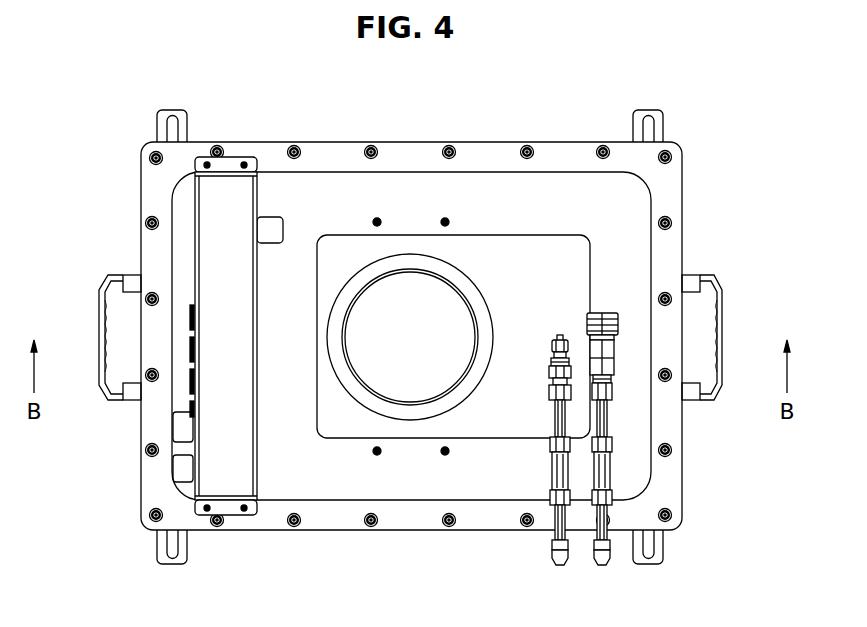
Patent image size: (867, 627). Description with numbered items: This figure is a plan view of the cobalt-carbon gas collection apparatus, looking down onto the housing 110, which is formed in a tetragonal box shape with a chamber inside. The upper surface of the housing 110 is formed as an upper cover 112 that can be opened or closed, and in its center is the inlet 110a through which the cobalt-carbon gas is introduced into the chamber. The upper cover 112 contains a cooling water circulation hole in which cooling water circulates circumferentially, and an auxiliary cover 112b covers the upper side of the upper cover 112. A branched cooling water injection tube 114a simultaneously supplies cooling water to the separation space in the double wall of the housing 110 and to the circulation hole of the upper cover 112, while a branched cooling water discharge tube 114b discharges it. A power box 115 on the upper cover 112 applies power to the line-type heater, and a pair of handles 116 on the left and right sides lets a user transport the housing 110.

The housing 110 is at (546, 132).
The inlet 110a is at (408, 283).
The upper cover 112 is at (671, 181).
The auxiliary cover 112b is at (480, 187).
The cooling water injection tube 114a is at (606, 428).
The cooling water discharge tube 114b is at (560, 542).
The power box 115 is at (231, 185).
The handles 116 is at (112, 275).